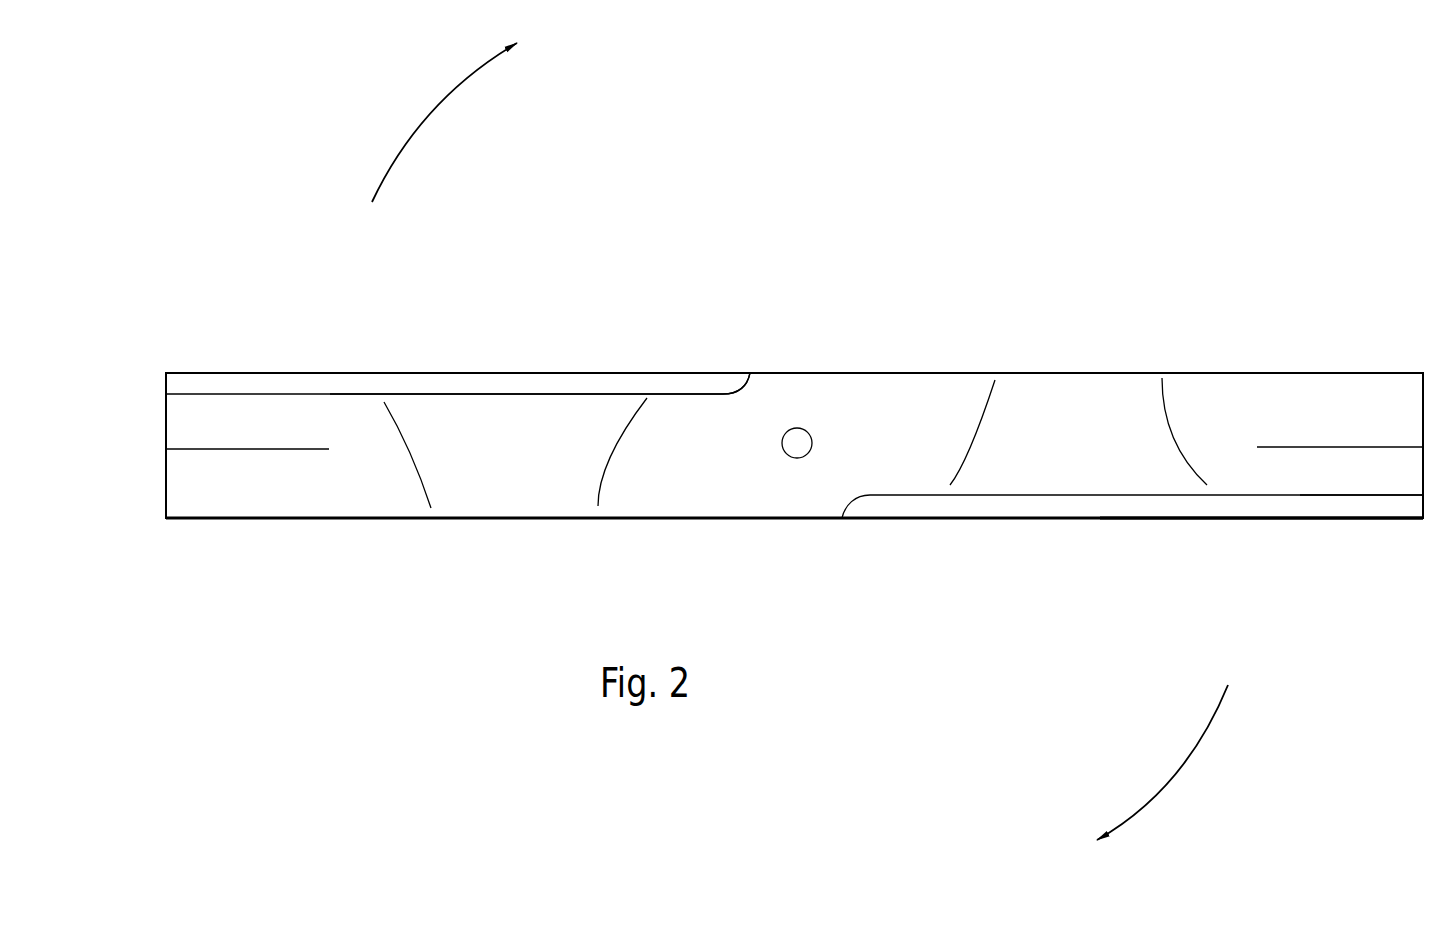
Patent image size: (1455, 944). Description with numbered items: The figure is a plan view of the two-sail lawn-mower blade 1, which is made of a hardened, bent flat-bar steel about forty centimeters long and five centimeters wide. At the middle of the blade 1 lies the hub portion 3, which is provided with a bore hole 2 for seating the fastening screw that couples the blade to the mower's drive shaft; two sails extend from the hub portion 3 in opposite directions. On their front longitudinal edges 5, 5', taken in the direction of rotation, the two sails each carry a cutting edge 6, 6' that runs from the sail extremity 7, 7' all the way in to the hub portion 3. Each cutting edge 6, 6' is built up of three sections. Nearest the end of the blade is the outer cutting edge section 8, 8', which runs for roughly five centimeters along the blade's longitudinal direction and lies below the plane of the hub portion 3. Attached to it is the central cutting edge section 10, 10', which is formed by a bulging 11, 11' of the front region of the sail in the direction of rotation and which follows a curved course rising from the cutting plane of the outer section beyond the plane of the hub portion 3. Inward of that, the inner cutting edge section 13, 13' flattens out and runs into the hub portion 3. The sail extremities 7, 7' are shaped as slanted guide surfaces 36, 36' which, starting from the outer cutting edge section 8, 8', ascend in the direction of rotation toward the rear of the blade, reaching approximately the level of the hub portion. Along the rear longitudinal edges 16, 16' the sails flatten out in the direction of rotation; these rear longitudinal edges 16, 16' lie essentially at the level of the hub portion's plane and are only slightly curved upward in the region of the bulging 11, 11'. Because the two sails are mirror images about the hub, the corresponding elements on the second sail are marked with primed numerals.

The blade 1 is at (860, 330).
The bore hole 2 is at (790, 456).
The hub portion 3 is at (735, 490).
The front longitudinal edge 5 is at (1336, 566).
The front longitudinal edge 5' is at (458, 324).
The cutting edge 6 is at (1175, 553).
The cutting edge 6' is at (550, 335).
The sail extremity 7 is at (1438, 478).
The sail extremity 7' is at (159, 405).
The outer cutting edge section 8 is at (1361, 545).
The outer cutting edge section 8' is at (458, 343).
The central cutting edge section 10 is at (1211, 544).
The central cutting edge section 10' is at (465, 343).
The bulging 11 is at (997, 389).
The bulging 11' is at (430, 498).
The inner cutting edge section 13 is at (921, 544).
The inner cutting edge section 13' is at (675, 343).
The rear longitudinal edge 16 is at (1160, 389).
The rear longitudinal edge 16' is at (585, 496).
The slanted guide surface 36 is at (1340, 370).
The slanted guide surface 36' is at (247, 538).